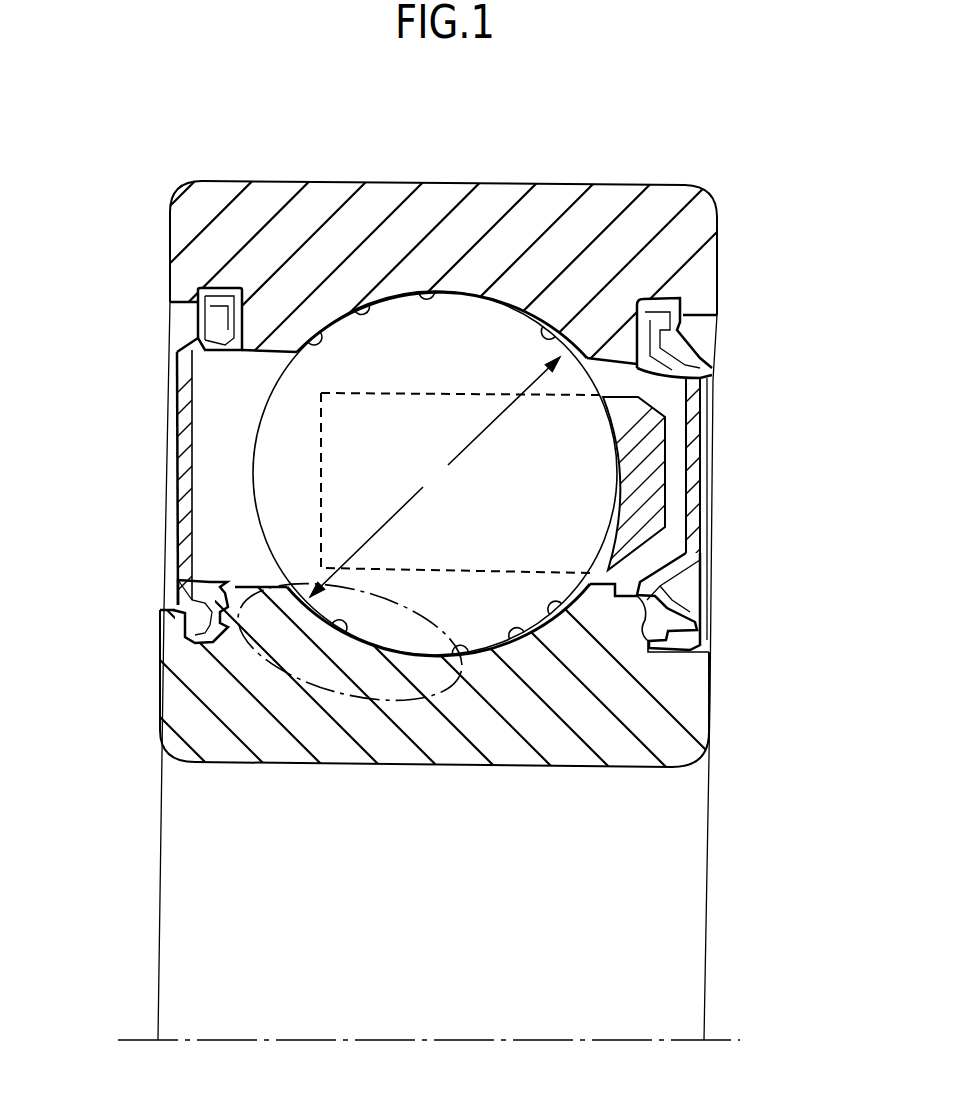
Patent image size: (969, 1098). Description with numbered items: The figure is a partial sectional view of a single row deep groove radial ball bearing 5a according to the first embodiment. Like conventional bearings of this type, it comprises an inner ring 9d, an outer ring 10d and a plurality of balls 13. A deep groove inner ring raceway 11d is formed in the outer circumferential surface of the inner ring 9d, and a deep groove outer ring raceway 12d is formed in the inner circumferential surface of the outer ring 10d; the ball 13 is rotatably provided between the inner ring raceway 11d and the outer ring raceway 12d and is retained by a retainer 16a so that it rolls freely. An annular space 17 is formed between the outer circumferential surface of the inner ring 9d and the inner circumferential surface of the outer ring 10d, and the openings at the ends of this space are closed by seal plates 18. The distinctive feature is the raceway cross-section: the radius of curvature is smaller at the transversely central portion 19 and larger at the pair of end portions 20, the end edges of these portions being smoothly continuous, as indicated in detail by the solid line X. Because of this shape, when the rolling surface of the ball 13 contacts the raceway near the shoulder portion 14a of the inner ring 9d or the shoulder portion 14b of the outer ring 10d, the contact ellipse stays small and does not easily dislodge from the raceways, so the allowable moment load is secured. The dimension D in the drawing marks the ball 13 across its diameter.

The single row deep groove radial ball bearing 5a is at (731, 204).
The inner ring 9d is at (377, 742).
The outer ring 10d is at (511, 187).
The inner ring raceway 11d is at (545, 648).
The outer ring raceway 12d is at (352, 300).
The ball 13 is at (278, 424).
The shoulder portion 14a is at (208, 578).
The shoulder portion 14b is at (195, 376).
The retainer 16a is at (658, 462).
The annular space 17 is at (210, 468).
The seal plate 18 is at (183, 498).
The central portion 19 is at (423, 290).
The end portion 20 is at (316, 330).
The solid line X is at (232, 660).
The ball diameter D is at (455, 477).